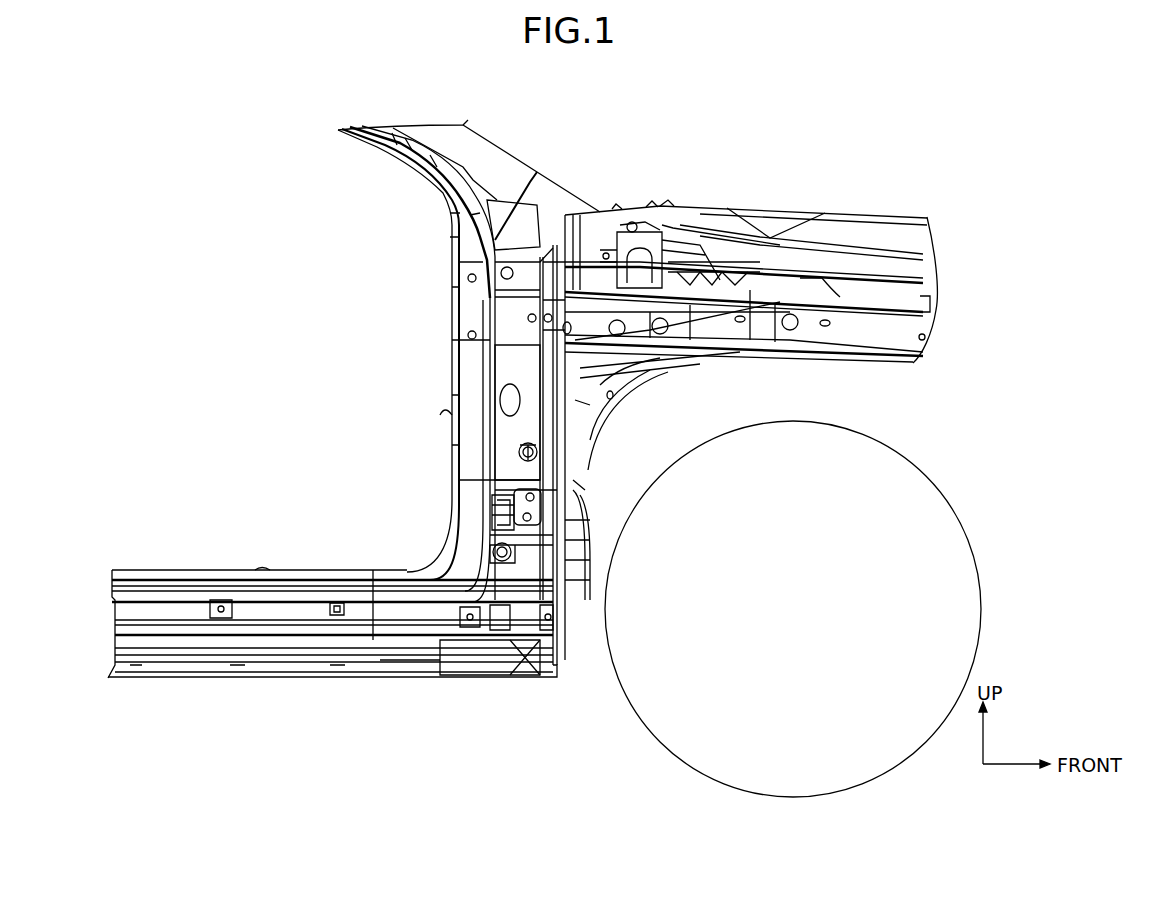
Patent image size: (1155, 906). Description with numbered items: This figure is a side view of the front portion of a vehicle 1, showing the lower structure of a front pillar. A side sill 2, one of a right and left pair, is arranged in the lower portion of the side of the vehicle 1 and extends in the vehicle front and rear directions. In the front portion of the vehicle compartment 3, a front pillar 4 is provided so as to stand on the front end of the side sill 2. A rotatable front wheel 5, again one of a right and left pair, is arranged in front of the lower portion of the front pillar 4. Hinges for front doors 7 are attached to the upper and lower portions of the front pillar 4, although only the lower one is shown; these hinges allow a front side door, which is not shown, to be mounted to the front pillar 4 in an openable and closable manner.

The vehicle 1 is at (536, 151).
The side sill 2 is at (312, 672).
The vehicle compartment 3 is at (245, 413).
The front pillar 4 is at (490, 411).
The front wheel 5 is at (956, 523).
The hinge for front door 7 is at (533, 513).